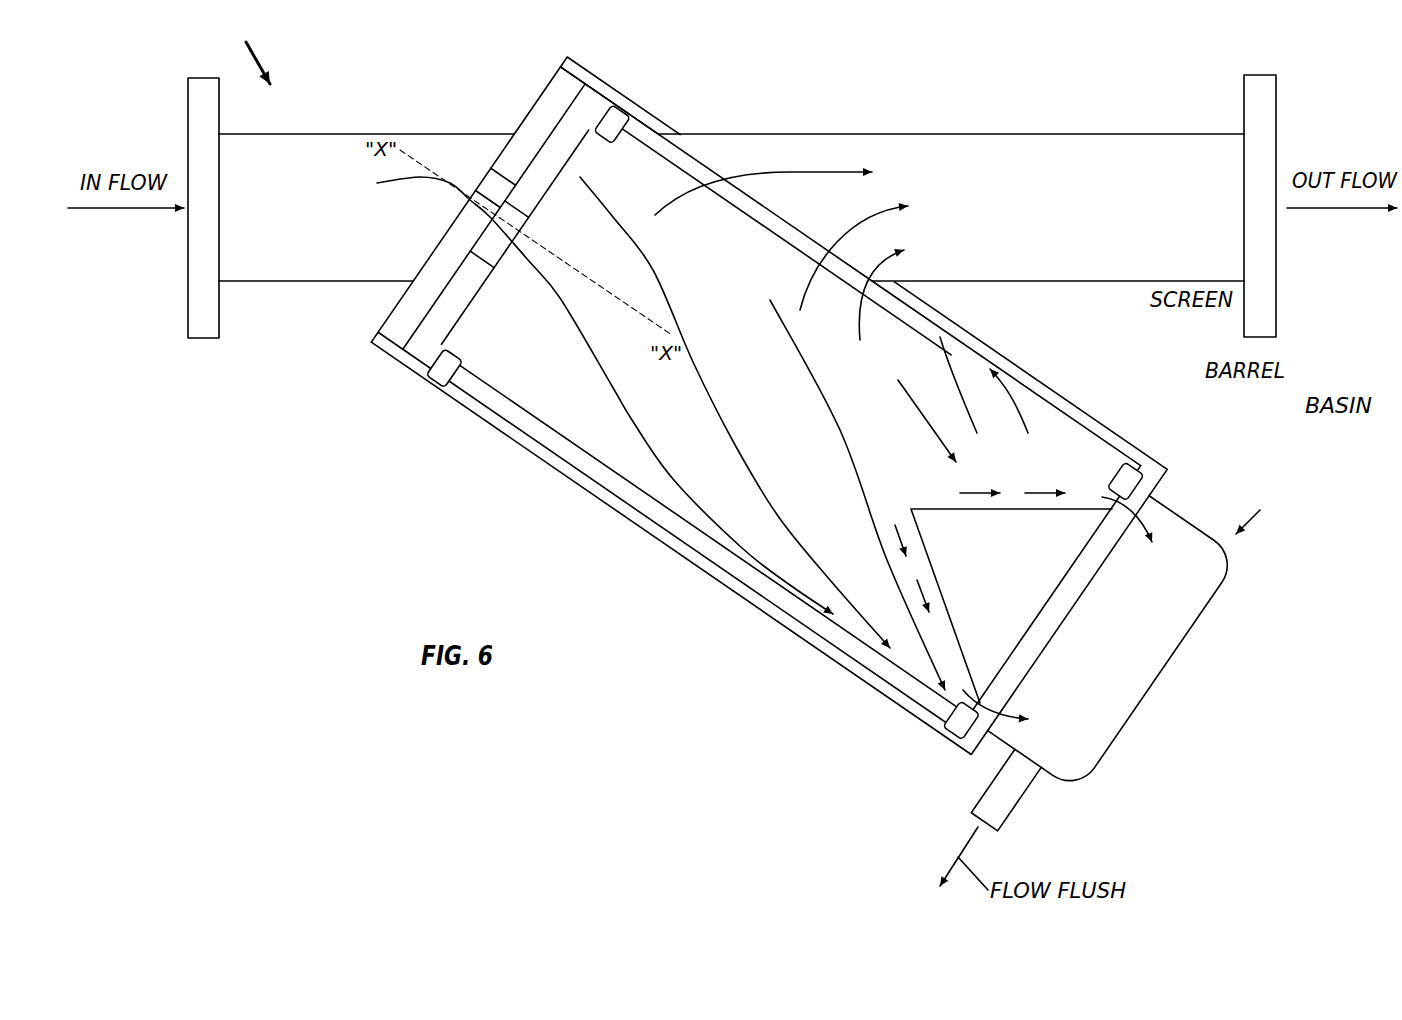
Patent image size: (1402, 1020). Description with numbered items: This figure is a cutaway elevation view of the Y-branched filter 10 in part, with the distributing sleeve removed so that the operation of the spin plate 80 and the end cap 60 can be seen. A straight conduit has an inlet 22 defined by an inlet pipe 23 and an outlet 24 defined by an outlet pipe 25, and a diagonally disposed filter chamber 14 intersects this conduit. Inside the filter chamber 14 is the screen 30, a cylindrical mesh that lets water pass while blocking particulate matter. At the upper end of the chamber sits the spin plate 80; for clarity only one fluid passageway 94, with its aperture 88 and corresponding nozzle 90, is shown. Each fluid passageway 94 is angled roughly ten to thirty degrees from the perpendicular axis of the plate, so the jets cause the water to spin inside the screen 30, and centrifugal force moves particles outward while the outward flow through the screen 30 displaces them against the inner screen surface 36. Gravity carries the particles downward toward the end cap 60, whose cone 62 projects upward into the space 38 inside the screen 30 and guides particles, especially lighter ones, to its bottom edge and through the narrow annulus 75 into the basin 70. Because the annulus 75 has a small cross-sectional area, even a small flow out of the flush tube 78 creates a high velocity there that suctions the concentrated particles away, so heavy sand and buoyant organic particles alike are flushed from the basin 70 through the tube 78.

The filter 10 is at (244, 53).
The filter chamber 14 is at (591, 493).
The inlet 22 is at (188, 132).
The inlet pipe 23 is at (277, 133).
The outlet 24 is at (1277, 132).
The outlet pipe 25 is at (885, 133).
The screen 30 is at (1042, 420).
The inner screen surface 36 is at (752, 224).
The space 38 is at (794, 404).
The end cap 60 is at (1262, 508).
The cone 62 is at (949, 507).
The basin 70 is at (1193, 512).
The annulus 75 is at (1150, 498).
The tube 78 is at (1020, 800).
The spin plate 80 is at (542, 95).
The aperture 88 is at (468, 222).
The nozzle 90 is at (484, 272).
The fluid passageway 94 is at (493, 197).